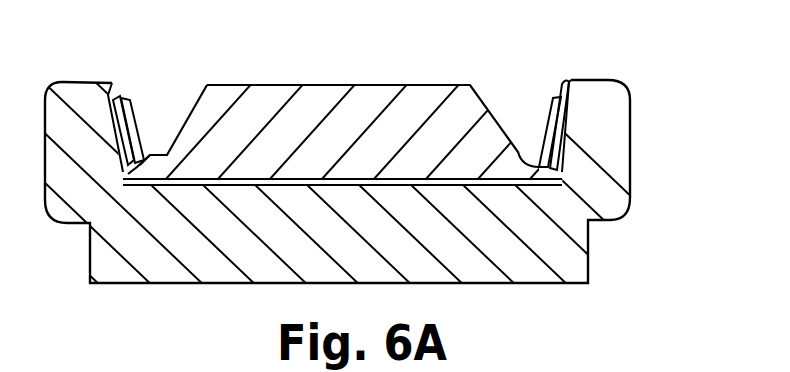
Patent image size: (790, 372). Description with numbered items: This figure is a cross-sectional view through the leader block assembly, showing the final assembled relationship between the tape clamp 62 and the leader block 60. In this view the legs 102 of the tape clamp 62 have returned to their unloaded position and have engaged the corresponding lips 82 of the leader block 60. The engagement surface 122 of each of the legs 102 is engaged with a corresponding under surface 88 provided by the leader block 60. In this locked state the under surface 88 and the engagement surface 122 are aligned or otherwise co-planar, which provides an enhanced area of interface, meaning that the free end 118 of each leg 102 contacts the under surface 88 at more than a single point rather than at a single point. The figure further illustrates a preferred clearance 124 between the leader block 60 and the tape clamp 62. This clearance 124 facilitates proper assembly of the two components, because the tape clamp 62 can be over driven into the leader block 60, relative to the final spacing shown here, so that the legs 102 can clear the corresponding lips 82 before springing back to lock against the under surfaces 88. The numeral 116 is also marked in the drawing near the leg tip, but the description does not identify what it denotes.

The leader block 60 is at (229, 284).
The tape clamp 62 is at (345, 88).
The lip 82 is at (115, 100).
The under surface 88 is at (563, 92).
The leg 102 is at (131, 104).
The lead tip 116 is at (140, 163).
The free end 118 is at (128, 100).
The engagement surface 122 is at (566, 112).
The clearance 124 is at (145, 187).